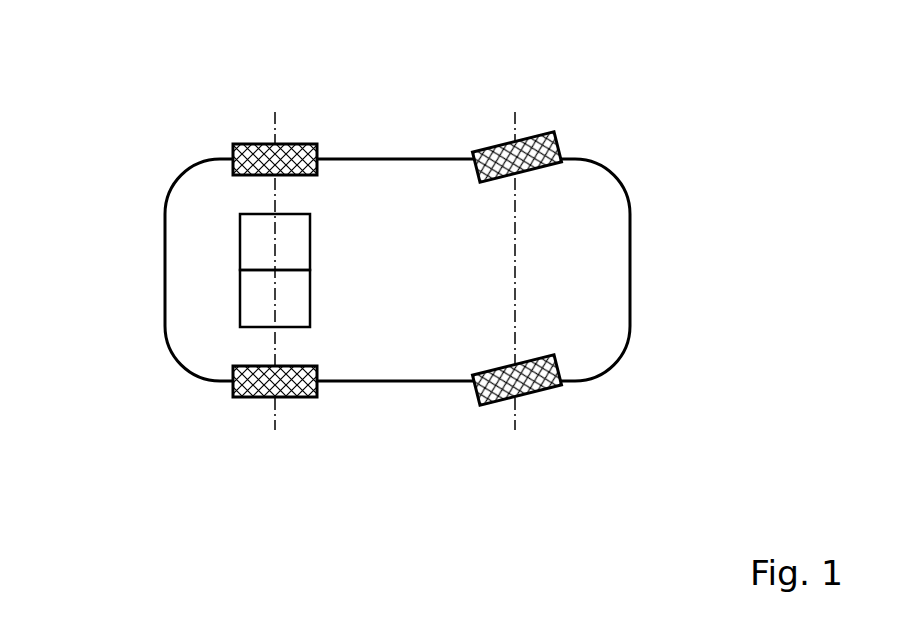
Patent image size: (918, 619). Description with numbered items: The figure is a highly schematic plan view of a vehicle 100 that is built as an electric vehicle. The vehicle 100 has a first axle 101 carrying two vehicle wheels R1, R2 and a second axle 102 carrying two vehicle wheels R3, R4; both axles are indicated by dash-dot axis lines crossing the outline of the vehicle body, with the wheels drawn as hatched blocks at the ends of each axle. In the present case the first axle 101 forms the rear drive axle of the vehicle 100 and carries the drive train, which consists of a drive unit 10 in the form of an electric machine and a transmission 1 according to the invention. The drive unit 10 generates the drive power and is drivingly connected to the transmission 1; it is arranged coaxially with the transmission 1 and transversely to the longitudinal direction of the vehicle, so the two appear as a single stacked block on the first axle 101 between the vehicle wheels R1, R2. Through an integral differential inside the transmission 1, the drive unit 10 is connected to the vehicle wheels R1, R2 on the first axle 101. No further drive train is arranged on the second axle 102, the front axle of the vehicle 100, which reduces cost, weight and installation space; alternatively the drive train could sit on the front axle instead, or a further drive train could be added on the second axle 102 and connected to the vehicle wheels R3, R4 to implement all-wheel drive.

The vehicle 100 is at (170, 140).
The transmission 1 is at (252, 300).
The drive unit 10 is at (252, 237).
The vehicle wheel R1 is at (290, 144).
The vehicle wheel R2 is at (291, 397).
The vehicle wheel R3 is at (559, 140).
The vehicle wheel R4 is at (537, 382).
The first axle 101 is at (275, 436).
The second axle 102 is at (515, 436).